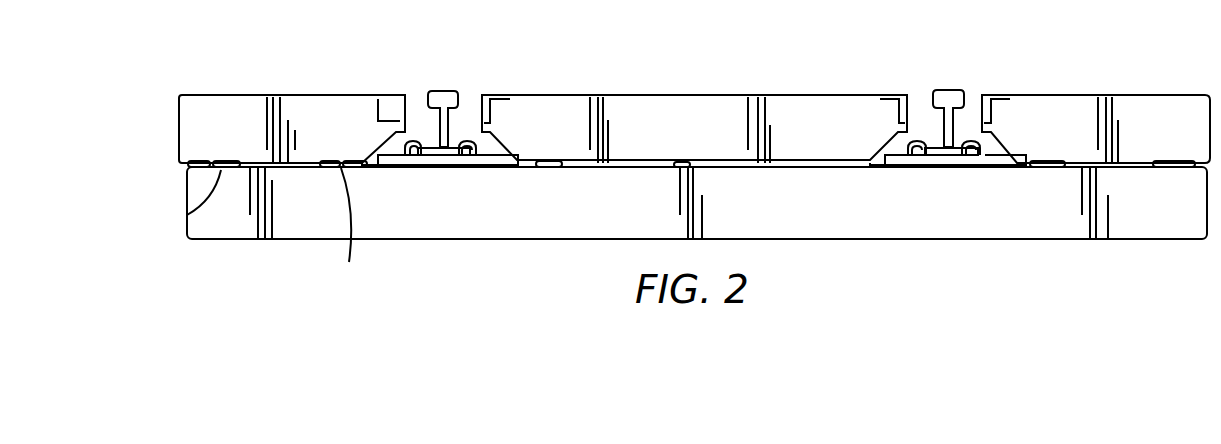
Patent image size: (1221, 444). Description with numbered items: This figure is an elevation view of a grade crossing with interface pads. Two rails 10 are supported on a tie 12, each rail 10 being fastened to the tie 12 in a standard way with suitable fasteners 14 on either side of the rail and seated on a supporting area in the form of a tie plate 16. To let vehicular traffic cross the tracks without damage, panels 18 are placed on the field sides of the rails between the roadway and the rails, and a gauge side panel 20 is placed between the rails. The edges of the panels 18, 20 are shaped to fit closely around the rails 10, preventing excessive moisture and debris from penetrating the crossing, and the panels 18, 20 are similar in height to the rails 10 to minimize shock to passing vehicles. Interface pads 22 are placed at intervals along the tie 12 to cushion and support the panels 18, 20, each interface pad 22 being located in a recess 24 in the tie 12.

The rail 10 is at (447, 86).
The tie 12 is at (228, 232).
The fastener 14 is at (418, 140).
The tie plate 16 is at (487, 165).
The panel 18 is at (240, 93).
The gauge side panel 20 is at (672, 93).
The interface pad 22 is at (187, 218).
The recess 24 is at (187, 186).